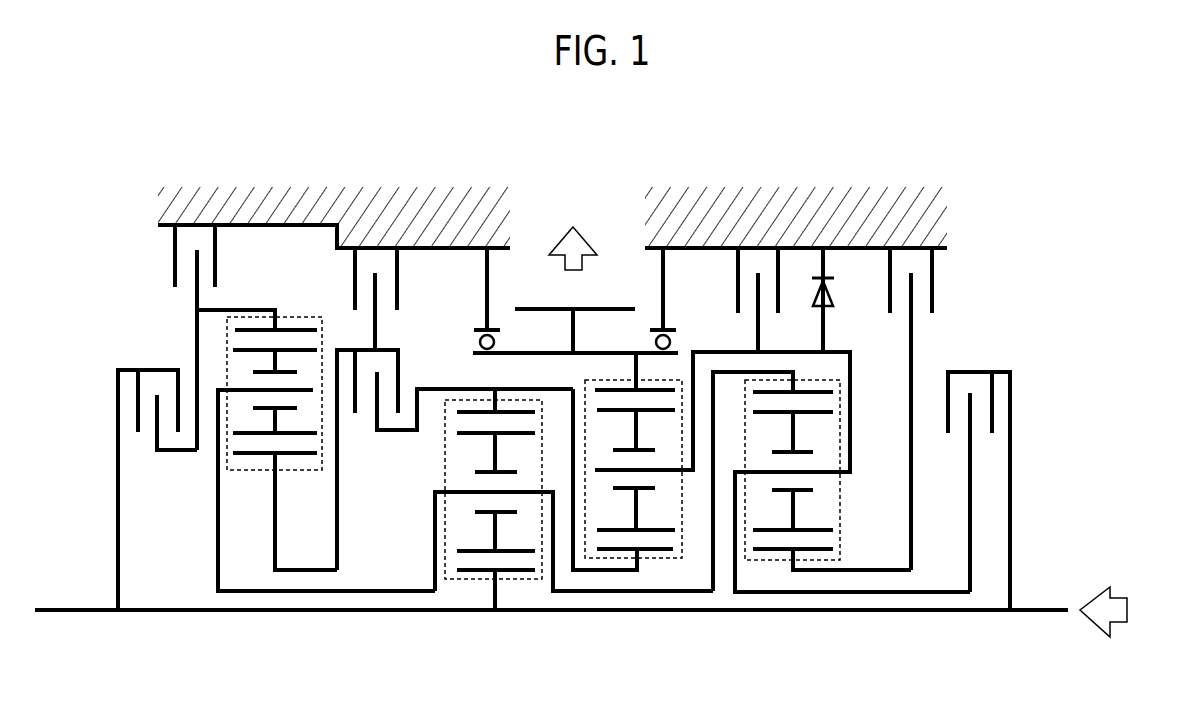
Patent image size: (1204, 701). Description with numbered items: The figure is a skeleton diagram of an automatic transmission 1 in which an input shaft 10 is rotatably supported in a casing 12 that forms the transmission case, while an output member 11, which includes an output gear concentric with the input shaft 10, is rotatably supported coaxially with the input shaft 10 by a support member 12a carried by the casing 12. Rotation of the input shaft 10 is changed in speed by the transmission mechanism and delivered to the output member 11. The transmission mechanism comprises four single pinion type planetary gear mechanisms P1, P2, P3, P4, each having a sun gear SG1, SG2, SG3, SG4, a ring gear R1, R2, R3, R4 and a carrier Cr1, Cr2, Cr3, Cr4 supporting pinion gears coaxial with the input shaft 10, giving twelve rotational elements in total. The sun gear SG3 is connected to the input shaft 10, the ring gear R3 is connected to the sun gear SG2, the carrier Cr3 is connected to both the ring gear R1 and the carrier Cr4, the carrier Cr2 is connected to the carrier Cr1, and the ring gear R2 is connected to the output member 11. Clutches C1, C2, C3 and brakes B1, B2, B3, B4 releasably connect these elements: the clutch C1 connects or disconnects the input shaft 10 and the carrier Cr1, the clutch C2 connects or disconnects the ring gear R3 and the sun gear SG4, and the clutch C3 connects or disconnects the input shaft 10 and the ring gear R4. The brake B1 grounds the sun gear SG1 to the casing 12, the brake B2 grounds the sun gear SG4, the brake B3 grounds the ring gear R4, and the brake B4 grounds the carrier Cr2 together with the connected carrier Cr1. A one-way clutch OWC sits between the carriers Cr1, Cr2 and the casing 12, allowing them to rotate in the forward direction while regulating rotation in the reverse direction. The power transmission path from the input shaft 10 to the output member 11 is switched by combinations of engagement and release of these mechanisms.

The automatic transmission 1 is at (707, 140).
The input shaft 10 is at (882, 613).
The output member 11 is at (577, 330).
The casing 12 is at (438, 190).
The support member 12a is at (484, 284).
The planetary gear mechanism P1 is at (842, 512).
The planetary gear mechanism P2 is at (678, 560).
The planetary gear mechanism P3 is at (452, 582).
The planetary gear mechanism P4 is at (245, 472).
The sun gear SG1 is at (835, 550).
The sun gear SG2 is at (648, 562).
The sun gear SG3 is at (525, 574).
The sun gear SG4 is at (297, 456).
The ring gear R1 is at (836, 393).
The ring gear R2 is at (670, 378).
The ring gear R3 is at (478, 408).
The ring gear R4 is at (298, 329).
The carrier Cr1 is at (851, 474).
The carrier Cr2 is at (670, 474).
The carrier Cr3 is at (455, 491).
The carrier Cr4 is at (305, 387).
The clutch C1 is at (1019, 398).
The clutch C2 is at (413, 346).
The clutch C3 is at (163, 465).
The brake B1 is at (949, 282).
The brake B2 is at (333, 268).
The brake B3 is at (162, 277).
The brake B4 is at (734, 293).
The one-way clutch OWC is at (836, 308).